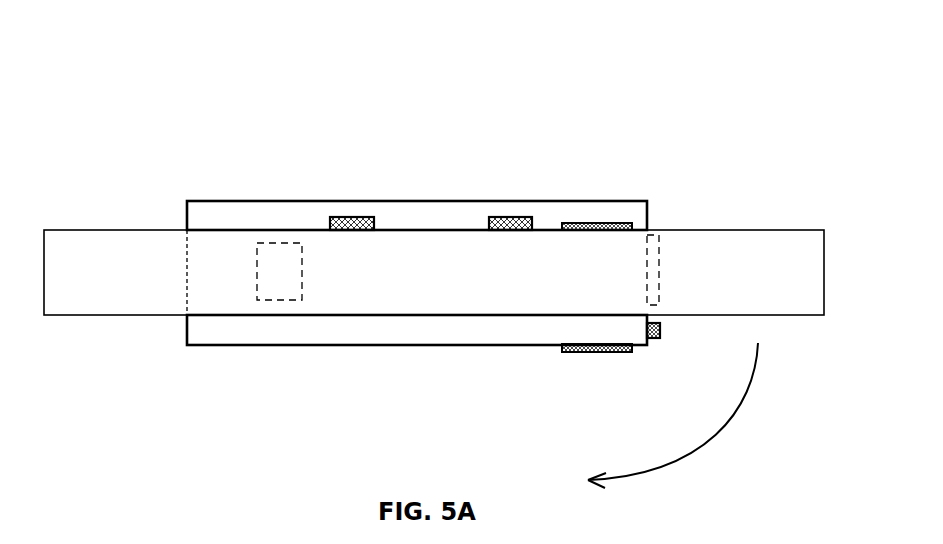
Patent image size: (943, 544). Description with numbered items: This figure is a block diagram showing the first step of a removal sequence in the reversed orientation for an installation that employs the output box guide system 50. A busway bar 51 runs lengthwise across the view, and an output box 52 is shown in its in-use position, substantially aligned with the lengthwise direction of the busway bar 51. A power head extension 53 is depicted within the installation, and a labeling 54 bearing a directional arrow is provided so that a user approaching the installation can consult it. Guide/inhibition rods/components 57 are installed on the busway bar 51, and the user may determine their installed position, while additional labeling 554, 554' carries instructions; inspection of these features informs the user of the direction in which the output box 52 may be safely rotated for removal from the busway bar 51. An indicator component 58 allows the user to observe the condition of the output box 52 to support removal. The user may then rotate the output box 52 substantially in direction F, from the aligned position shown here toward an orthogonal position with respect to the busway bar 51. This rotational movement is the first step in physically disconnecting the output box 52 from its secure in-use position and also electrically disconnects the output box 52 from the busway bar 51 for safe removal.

The output box guide system 50 is at (72, 98).
The busway bar 51 is at (762, 270).
The output box 52 is at (185, 327).
The power head extension 53 is at (279, 274).
The labeling 54 is at (655, 272).
The guide/inhibition rods/components 57 is at (352, 217).
The additional labeling 554 is at (597, 173).
The additional labeling 554' is at (577, 401).
The indicator component 58 is at (654, 338).
The direction F is at (673, 415).